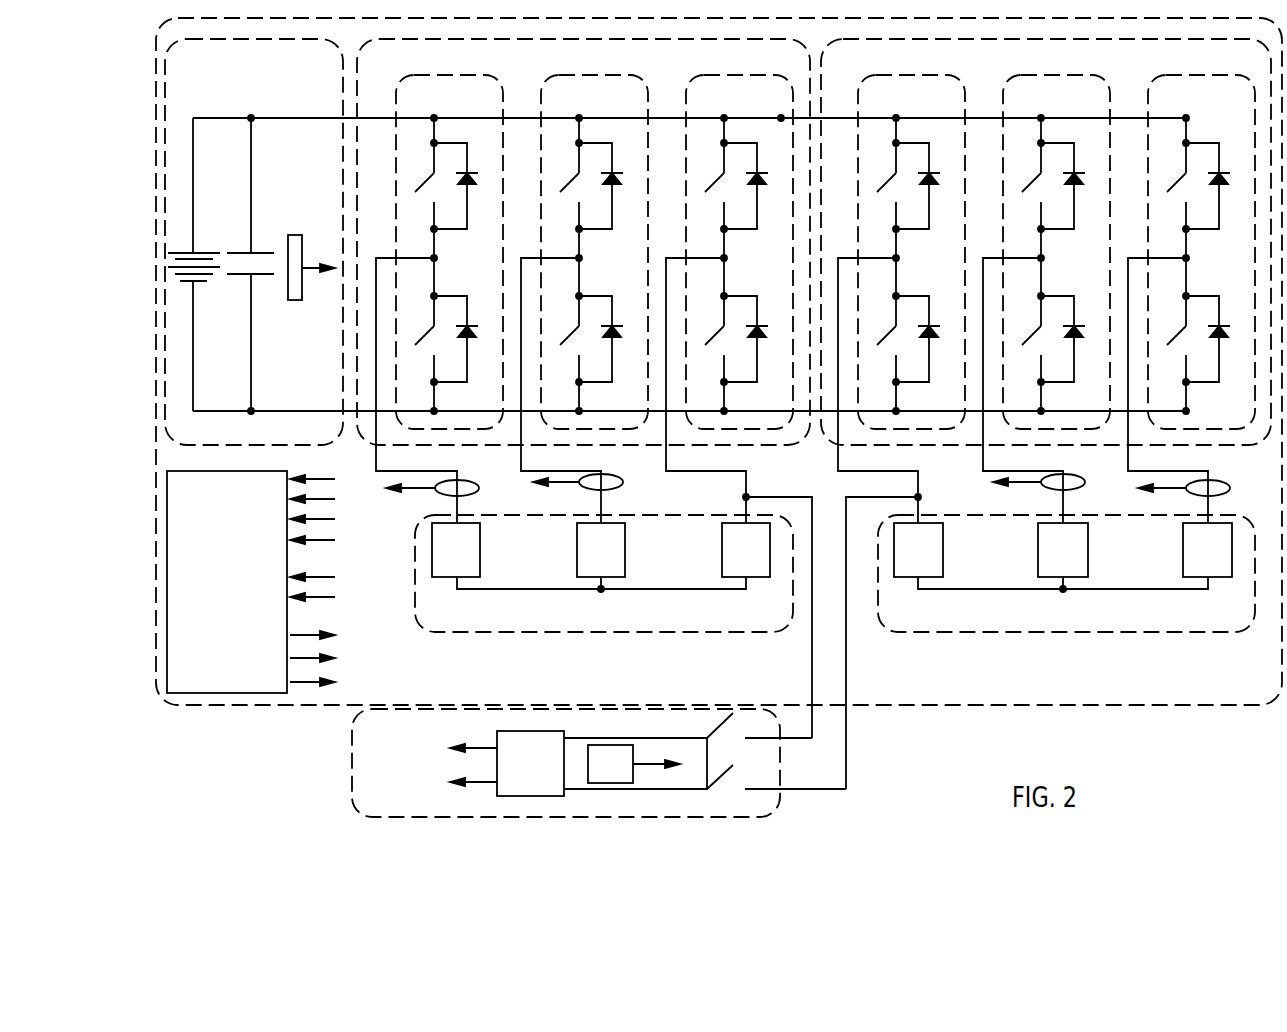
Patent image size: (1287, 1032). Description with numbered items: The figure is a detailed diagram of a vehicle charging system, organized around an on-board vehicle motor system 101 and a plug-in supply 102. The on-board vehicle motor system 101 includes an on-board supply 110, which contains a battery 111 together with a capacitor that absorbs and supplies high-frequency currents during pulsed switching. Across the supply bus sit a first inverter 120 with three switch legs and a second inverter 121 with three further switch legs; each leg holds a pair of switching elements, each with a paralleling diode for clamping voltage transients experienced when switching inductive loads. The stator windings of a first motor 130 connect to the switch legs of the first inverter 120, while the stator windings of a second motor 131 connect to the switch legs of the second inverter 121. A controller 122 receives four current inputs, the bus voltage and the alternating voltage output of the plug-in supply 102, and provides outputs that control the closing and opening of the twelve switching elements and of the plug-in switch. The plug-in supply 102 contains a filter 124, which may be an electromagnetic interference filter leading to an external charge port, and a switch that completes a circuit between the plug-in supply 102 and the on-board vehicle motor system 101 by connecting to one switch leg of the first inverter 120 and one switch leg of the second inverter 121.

The on-board vehicle motor system 101 is at (1068, 706).
The plug-in supply 102 is at (352, 762).
The on-board supply 110 is at (262, 23).
The battery 111 is at (309, 389).
The first inverter 120 is at (574, 23).
The second inverter 121 is at (1037, 23).
The controller 122 is at (218, 470).
The filter 124 is at (532, 731).
The first motor 130 is at (585, 633).
The second motor 131 is at (1020, 633).